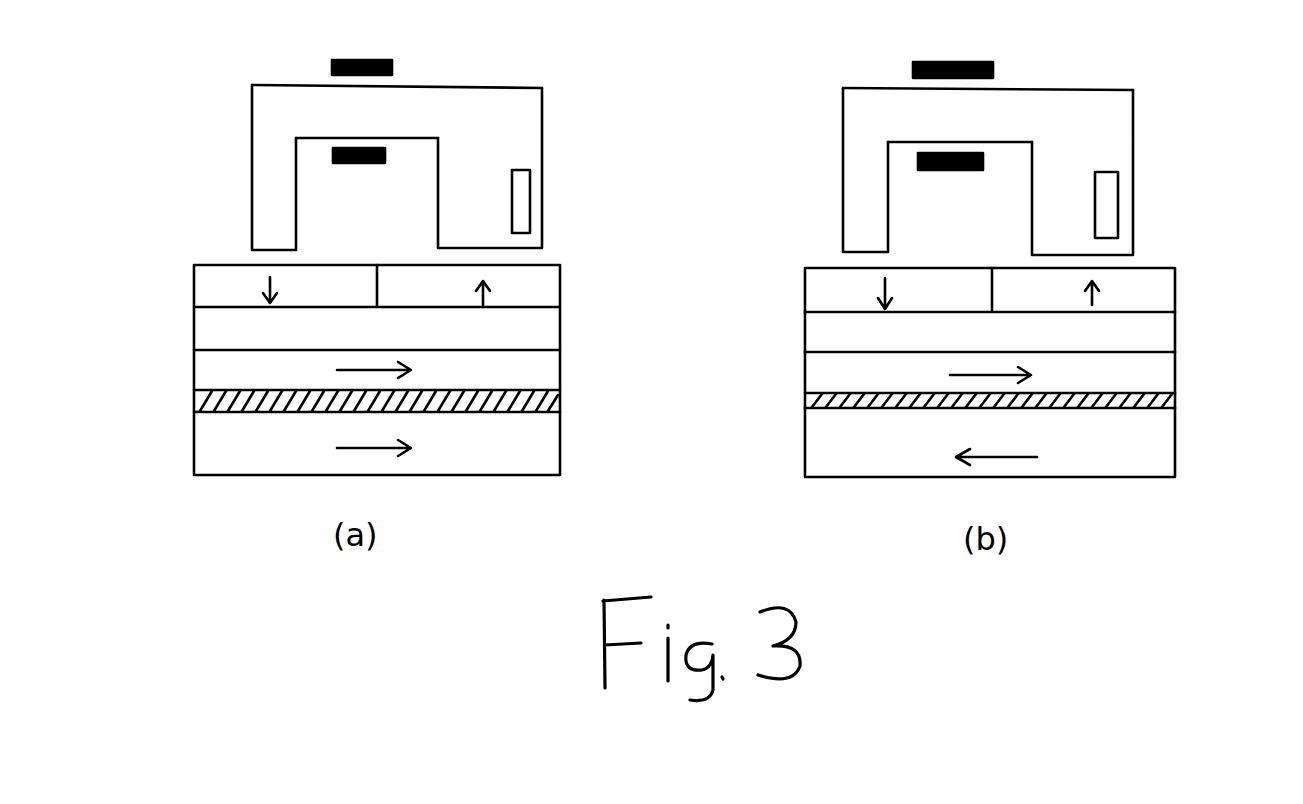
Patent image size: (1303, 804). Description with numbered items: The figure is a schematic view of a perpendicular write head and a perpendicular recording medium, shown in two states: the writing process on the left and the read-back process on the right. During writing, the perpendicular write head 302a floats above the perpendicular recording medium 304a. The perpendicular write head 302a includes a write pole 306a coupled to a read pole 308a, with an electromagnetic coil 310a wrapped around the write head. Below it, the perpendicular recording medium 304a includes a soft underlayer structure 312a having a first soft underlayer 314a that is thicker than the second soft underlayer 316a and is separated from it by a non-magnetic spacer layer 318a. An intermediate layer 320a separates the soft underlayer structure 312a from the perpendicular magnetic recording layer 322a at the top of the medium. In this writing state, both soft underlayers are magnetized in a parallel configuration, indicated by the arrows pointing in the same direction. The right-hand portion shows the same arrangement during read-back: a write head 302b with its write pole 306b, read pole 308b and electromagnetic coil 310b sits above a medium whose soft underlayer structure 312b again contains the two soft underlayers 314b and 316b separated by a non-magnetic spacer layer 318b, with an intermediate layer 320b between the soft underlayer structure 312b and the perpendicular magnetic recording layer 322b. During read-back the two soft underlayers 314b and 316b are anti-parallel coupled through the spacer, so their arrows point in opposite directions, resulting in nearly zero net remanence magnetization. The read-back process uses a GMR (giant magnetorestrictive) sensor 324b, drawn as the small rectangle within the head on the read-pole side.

The perpendicular write head 302a is at (354, 167).
The perpendicular recording medium 304a is at (397, 333).
The write pole 306a is at (270, 205).
The read pole 308a is at (528, 143).
The electromagnetic coil 310a is at (385, 55).
The soft underlayer structure 312a is at (375, 416).
The first soft underlayer 314a is at (560, 448).
The second soft underlayer 316a is at (560, 372).
The non-magnetic spacer layer 318a is at (560, 407).
The intermediate layer 320a is at (560, 333).
The perpendicular magnetic recording layer 322a is at (565, 295).
The write head (C-shaped yoke) 302b is at (1027, 171).
The return pole 306b is at (860, 208).
The main pole 308b is at (1133, 145).
The coil 310b is at (985, 55).
The recording layer structure 312b is at (999, 412).
The soft underlayer 314b is at (805, 457).
The soft underlayer 316b is at (805, 375).
The spacer layer 318b is at (805, 400).
The intermediate layer 320b is at (805, 338).
The top recording layer 322b is at (805, 295).
The GMR sensor 324b is at (1110, 218).